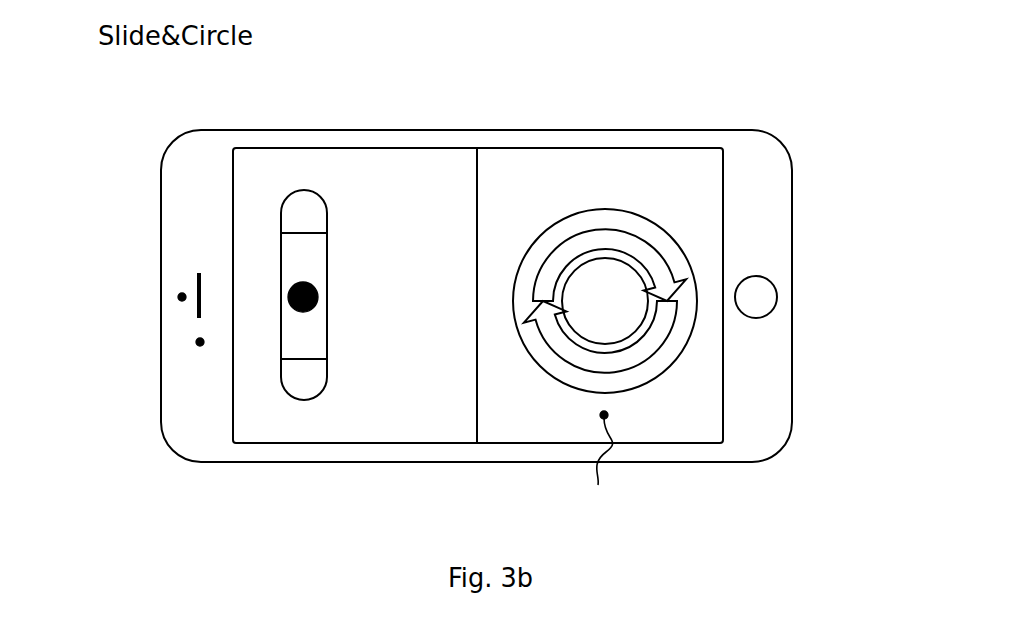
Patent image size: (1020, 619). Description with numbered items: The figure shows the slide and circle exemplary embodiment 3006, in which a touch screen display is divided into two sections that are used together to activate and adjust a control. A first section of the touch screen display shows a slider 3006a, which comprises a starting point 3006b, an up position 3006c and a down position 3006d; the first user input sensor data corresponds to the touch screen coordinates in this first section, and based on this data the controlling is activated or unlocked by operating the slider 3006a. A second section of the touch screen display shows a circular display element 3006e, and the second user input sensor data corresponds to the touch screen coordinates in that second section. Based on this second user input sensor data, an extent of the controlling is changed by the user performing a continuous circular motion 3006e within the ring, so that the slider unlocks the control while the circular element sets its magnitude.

The slide & circle exemplary embodiment 3006 is at (778, 452).
The slider 3006a is at (290, 254).
The starting point 3006b is at (288, 297).
The up position 3006c is at (290, 215).
The down position 3006d is at (290, 375).
The circular display element 3006e is at (610, 210).